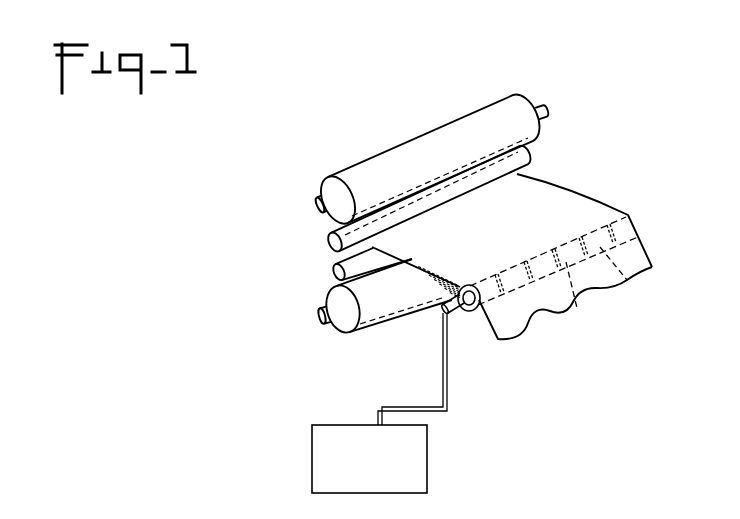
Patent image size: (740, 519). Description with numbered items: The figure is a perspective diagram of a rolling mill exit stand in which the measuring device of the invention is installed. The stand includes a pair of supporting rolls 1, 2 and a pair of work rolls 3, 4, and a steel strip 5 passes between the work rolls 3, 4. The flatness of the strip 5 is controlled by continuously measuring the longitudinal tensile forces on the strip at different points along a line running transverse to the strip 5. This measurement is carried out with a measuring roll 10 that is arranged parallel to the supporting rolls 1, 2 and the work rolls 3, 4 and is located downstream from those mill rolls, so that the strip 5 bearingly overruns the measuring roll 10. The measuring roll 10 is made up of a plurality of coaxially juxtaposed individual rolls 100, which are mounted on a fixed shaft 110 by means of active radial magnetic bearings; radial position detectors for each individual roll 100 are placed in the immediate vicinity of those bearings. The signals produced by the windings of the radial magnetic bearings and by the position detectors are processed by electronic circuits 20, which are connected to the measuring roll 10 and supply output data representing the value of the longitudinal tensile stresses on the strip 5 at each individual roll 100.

The supporting roll 1 is at (383, 160).
The supporting roll 2 is at (367, 313).
The work roll 3 is at (328, 234).
The work roll 4 is at (331, 266).
The steel strip 5 is at (557, 197).
The measuring roll 10 is at (478, 314).
The electronic circuits 20 is at (418, 462).
The individual roll 100 is at (577, 308).
The fixed shaft 110 is at (445, 298).